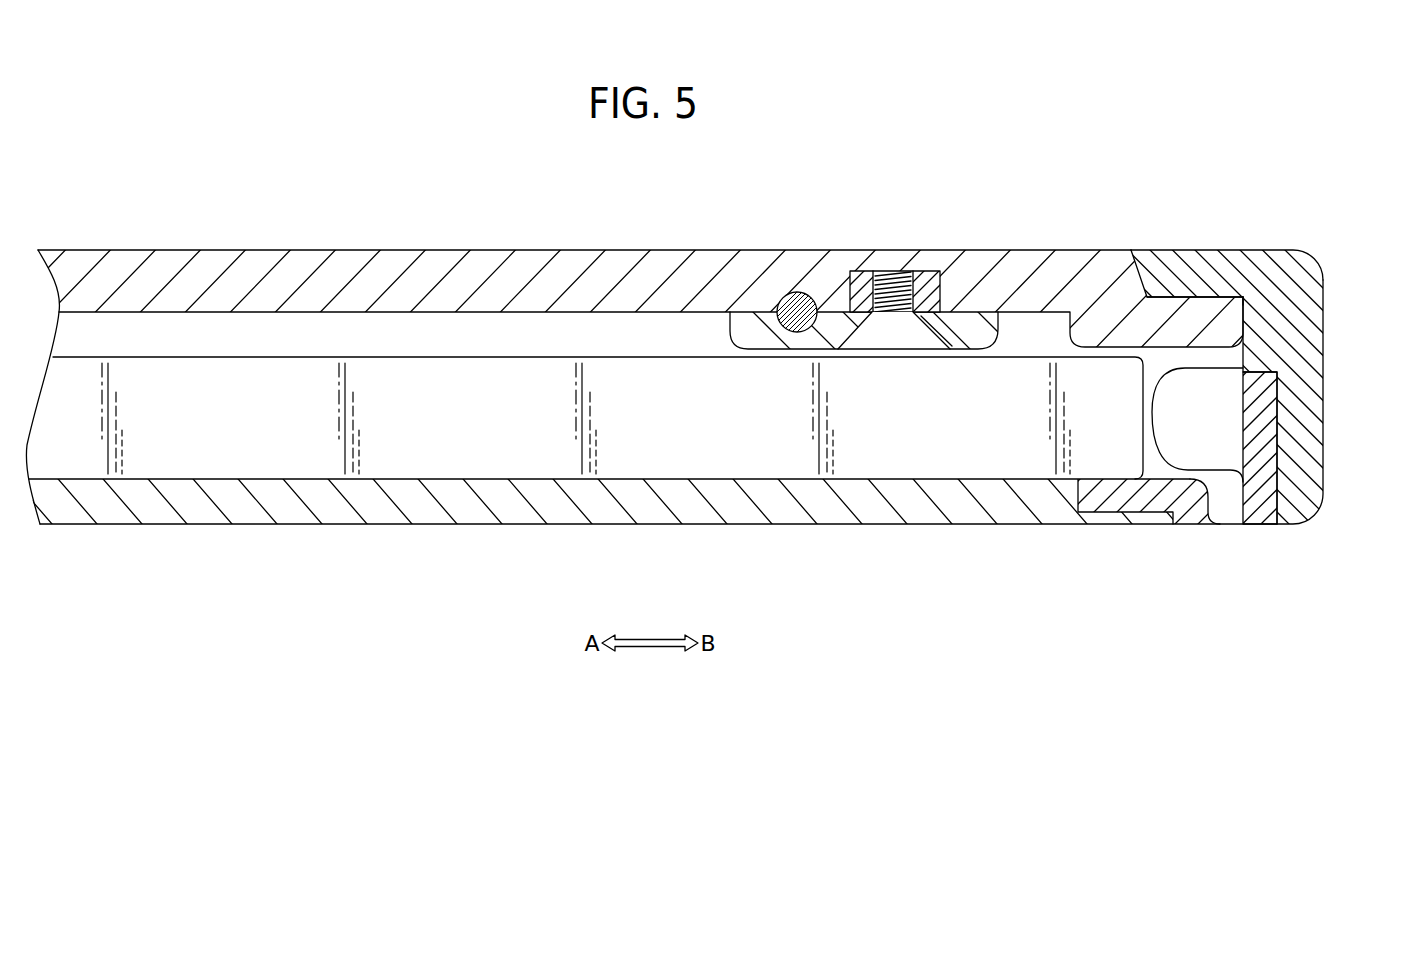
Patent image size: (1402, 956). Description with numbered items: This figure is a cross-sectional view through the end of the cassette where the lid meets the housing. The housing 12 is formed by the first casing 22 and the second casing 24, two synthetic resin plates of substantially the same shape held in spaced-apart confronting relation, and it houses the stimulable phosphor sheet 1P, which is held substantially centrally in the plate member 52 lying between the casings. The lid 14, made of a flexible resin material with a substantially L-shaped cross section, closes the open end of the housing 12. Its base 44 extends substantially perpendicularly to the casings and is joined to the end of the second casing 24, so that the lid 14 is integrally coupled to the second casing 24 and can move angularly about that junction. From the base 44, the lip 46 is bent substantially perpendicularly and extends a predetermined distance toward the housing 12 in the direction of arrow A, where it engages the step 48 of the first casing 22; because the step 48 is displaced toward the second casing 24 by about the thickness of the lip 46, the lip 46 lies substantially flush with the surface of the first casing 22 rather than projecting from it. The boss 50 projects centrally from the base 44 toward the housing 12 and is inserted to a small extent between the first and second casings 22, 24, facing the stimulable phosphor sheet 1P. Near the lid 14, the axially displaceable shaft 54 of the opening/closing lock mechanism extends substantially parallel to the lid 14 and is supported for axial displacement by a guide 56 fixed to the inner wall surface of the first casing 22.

The housing 12 is at (267, 246).
The lid 14 is at (1330, 344).
The first casing 22 is at (478, 262).
The second casing 24 is at (477, 516).
The base 44 is at (1298, 457).
The lip 46 is at (1181, 266).
The step 48 is at (1210, 295).
The boss 50 is at (1192, 452).
The plate member 52 is at (435, 392).
The shaft 54 is at (796, 302).
The guide 56 is at (960, 338).
The stimulable phosphor sheet 1P is at (240, 456).